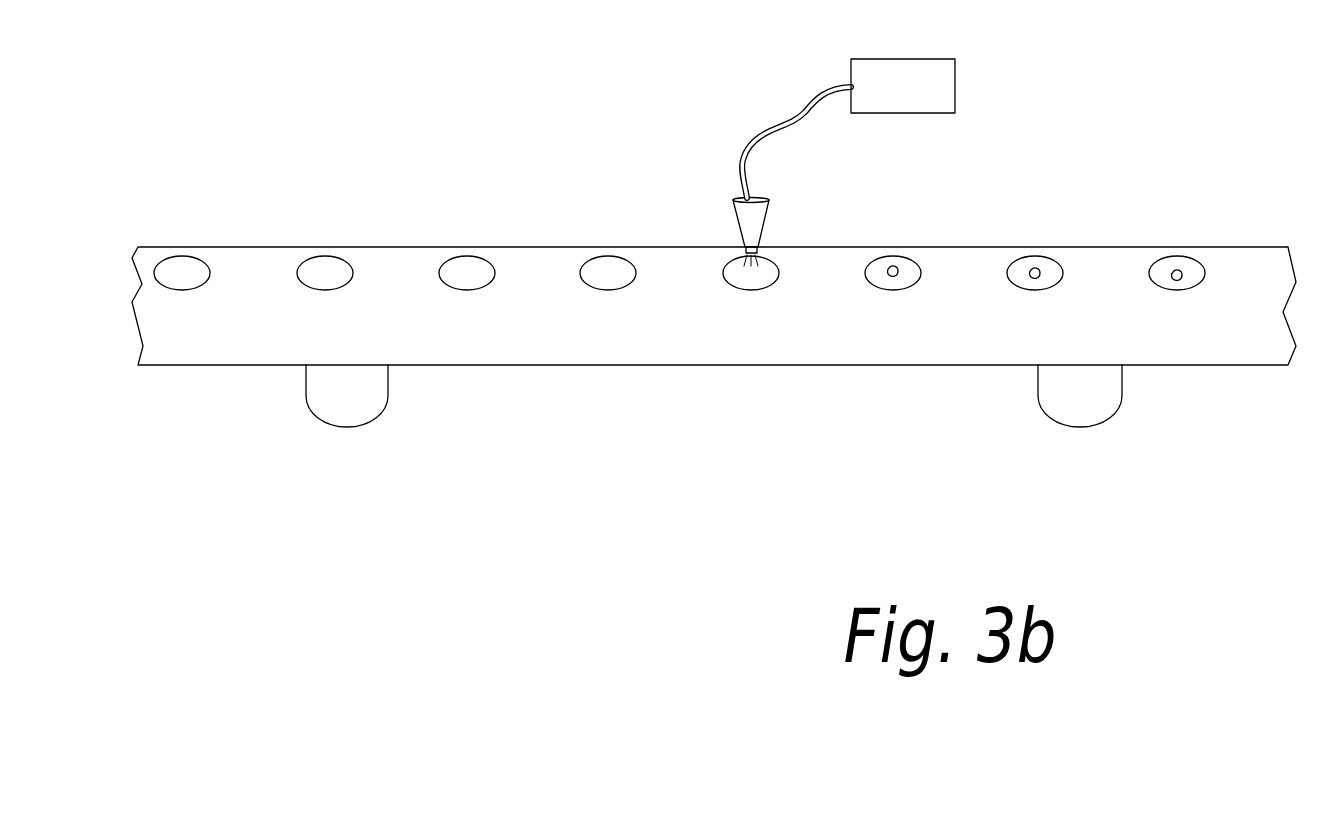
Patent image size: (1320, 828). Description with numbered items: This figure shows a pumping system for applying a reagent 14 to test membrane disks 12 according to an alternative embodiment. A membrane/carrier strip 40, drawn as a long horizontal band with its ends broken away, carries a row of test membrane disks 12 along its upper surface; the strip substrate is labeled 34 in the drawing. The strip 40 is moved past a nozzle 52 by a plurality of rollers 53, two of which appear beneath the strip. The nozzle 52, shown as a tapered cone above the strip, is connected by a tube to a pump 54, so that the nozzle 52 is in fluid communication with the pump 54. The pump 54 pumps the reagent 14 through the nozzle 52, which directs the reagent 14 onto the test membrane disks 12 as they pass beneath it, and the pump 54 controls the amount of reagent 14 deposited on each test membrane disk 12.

The test membrane disks 12 is at (325, 265).
The reagent 14 is at (772, 252).
The web / substrate strip 34 is at (1265, 352).
The membrane/carrier strip 40 is at (145, 219).
The nozzle 52 is at (732, 210).
The rollers 53 is at (340, 415).
The pump 54 is at (956, 86).